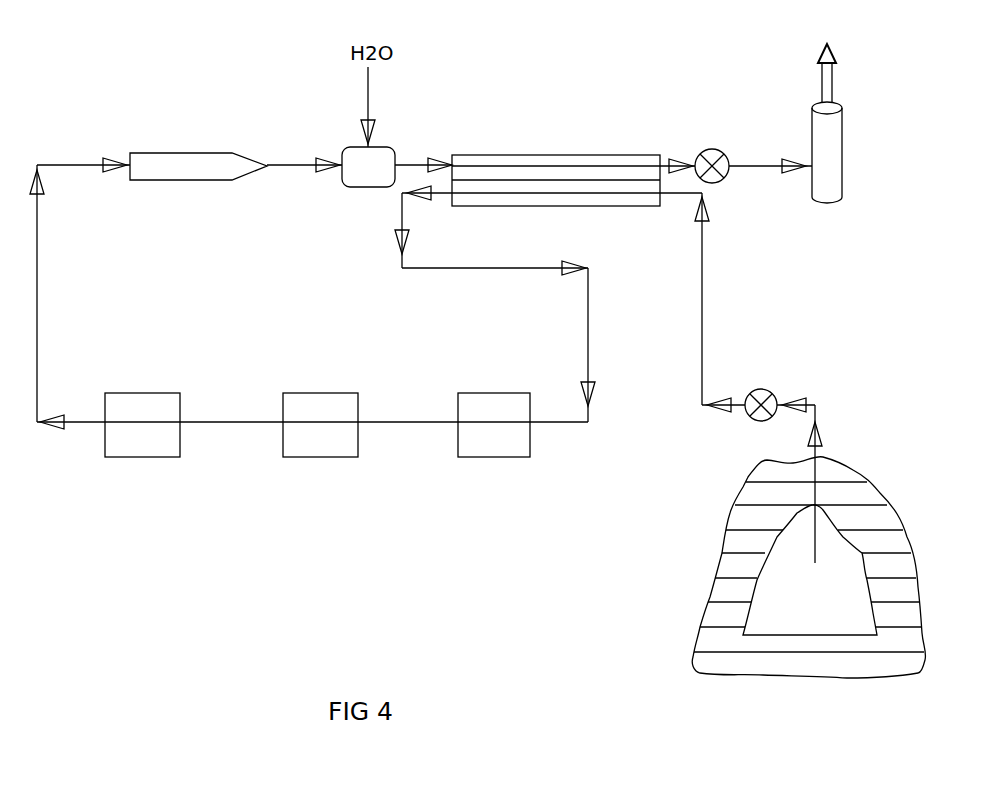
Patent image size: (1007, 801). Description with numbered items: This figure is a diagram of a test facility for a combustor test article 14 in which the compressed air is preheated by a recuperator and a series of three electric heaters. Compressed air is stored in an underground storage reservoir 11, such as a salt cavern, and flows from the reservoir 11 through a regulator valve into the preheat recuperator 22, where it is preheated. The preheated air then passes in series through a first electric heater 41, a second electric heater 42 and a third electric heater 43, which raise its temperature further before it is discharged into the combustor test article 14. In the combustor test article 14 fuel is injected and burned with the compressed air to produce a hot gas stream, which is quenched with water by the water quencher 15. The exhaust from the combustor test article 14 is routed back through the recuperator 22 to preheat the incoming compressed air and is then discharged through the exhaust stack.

The combustor test article 14 is at (187, 163).
The water quencher 15 is at (360, 160).
The preheat recuperator 22 is at (575, 175).
The first electric heater 41 is at (145, 437).
The second electric heater 42 is at (322, 437).
The third electric heater 43 is at (497, 435).
The compressed air storage reservoir 11 is at (837, 575).